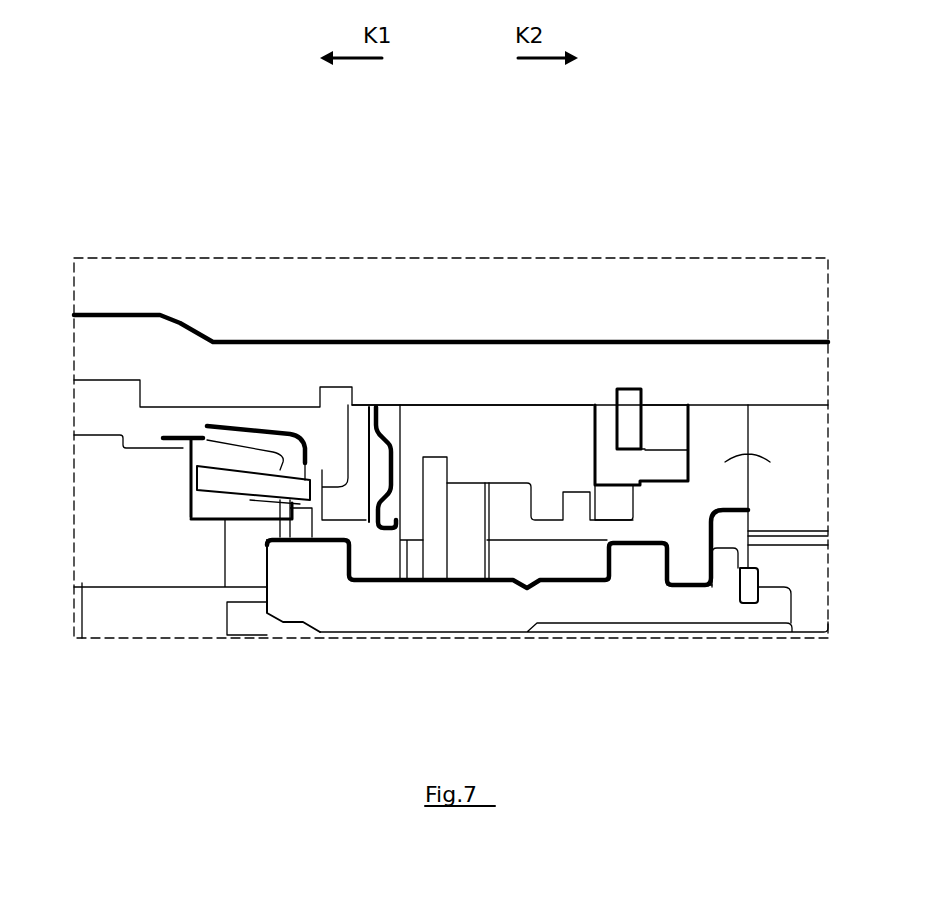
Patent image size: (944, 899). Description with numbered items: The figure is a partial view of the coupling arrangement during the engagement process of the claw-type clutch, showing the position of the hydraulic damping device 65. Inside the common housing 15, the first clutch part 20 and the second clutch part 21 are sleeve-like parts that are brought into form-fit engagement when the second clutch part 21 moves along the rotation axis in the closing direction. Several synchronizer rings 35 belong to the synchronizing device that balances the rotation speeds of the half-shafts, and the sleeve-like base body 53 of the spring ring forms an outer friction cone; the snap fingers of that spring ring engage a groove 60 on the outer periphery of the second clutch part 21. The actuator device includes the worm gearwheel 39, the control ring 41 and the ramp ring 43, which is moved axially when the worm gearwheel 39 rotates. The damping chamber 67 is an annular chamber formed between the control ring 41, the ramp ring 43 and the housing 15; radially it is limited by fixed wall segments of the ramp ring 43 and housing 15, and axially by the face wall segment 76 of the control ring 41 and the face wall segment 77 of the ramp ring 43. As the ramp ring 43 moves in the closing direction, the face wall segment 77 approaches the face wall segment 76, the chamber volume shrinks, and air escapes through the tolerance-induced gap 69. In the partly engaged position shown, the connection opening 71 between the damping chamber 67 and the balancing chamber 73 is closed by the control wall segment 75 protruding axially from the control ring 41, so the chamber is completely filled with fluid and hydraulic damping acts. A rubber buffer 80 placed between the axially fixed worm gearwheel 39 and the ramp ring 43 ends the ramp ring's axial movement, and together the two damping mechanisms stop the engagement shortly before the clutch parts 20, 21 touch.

The housing 15 is at (378, 378).
The first clutch part 20 is at (150, 560).
The second clutch part 21 is at (610, 605).
The synchronizer rings 35 is at (228, 455).
The worm gearwheel 39 is at (447, 428).
The control ring 41 is at (610, 405).
The ramp ring 43 is at (725, 460).
The sleeve-like base body 53 is at (250, 440).
The groove 60 is at (514, 592).
The hydraulic damping device 65 is at (638, 355).
The damping chamber 67 is at (665, 424).
The gap 69 is at (745, 394).
The connection opening 71 is at (616, 502).
The balancing chamber 73 is at (600, 518).
The control wall segment 75 is at (630, 462).
The face wall segment of the control ring 76 is at (607, 430).
The face wall segment of the ramp ring 77 is at (675, 463).
The rubber buffer 80 is at (432, 562).